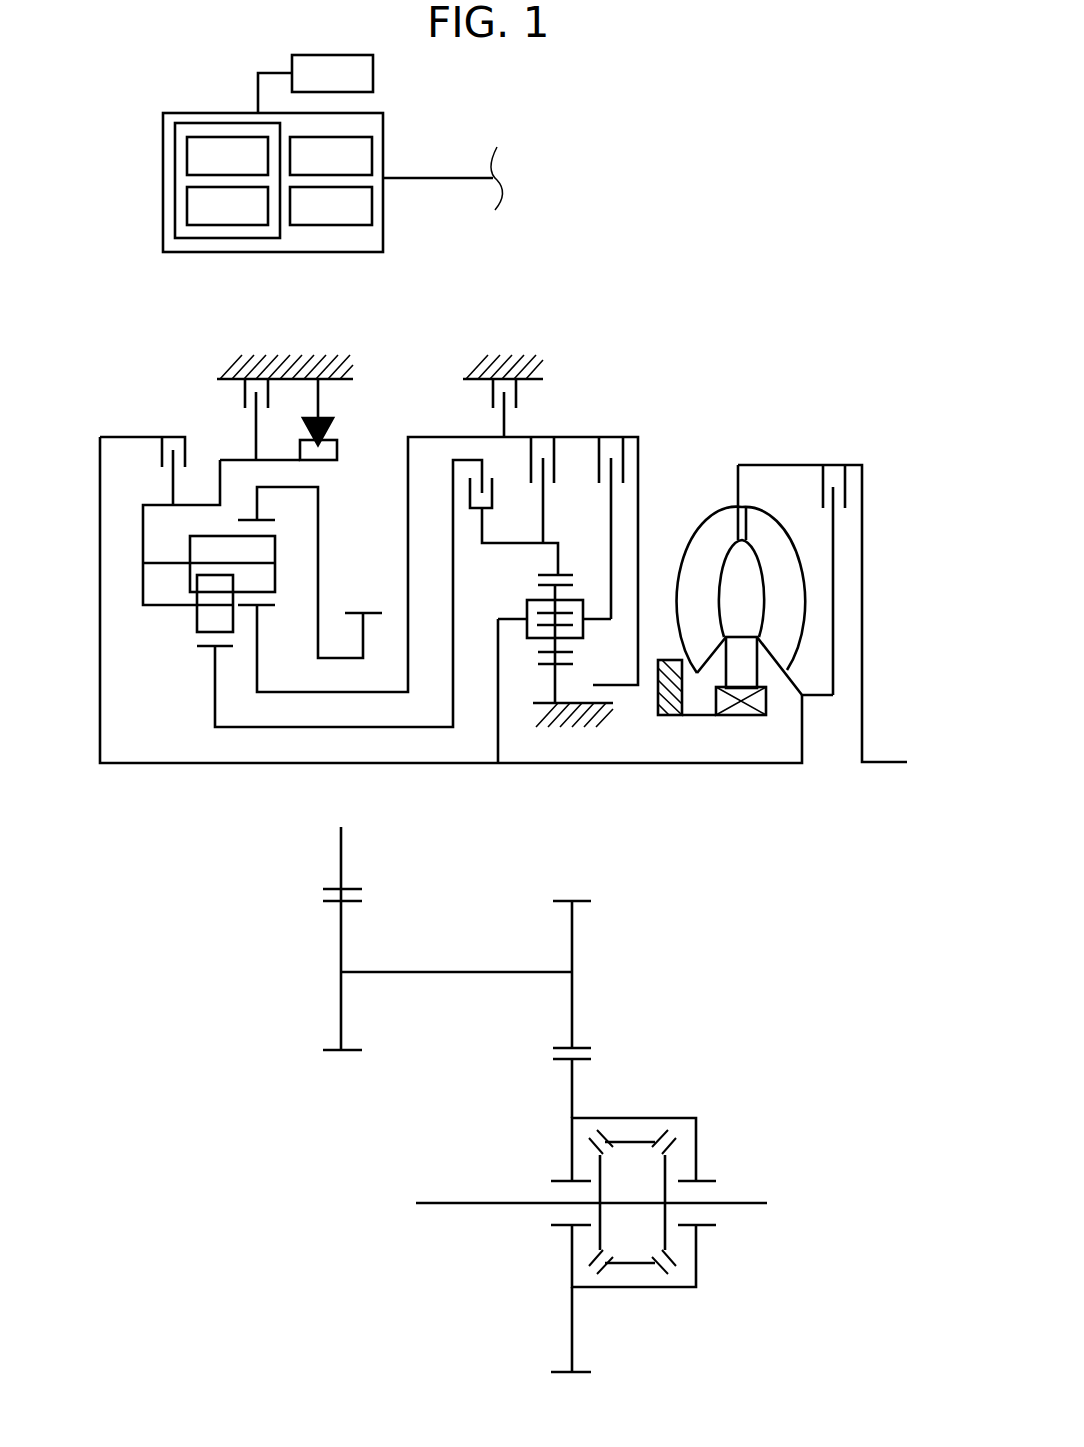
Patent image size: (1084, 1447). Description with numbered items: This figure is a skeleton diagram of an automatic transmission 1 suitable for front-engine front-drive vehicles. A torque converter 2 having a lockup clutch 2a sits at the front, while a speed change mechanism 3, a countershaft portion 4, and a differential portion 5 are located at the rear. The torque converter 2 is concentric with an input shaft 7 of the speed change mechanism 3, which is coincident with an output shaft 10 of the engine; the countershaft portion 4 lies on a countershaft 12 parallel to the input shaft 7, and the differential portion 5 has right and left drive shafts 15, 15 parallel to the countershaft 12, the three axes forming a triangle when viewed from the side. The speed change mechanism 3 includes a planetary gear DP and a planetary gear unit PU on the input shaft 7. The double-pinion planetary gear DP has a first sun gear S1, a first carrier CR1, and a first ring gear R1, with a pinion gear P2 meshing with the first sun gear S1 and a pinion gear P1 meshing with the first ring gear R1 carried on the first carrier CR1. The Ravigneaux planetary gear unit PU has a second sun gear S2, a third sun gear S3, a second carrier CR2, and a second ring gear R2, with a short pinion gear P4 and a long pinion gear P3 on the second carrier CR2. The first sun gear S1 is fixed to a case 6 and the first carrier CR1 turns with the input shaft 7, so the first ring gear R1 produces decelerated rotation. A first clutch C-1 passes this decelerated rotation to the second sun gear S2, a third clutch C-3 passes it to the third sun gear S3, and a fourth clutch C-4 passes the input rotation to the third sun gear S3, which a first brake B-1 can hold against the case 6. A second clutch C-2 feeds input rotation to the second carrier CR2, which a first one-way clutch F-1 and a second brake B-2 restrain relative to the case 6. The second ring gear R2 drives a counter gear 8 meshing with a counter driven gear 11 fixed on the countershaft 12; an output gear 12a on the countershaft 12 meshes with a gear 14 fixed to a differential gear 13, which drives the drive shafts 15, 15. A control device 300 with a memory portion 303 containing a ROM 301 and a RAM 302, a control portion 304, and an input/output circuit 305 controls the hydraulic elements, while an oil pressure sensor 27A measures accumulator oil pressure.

The automatic transmission 1 is at (698, 313).
The torque converter 2 is at (764, 452).
The lockup clutch 2a is at (838, 500).
The speed change mechanism 3 is at (403, 338).
The countershaft portion 4 is at (634, 988).
The differential portion 5 is at (699, 1110).
The case 6 is at (215, 368).
The input shaft 7 is at (725, 765).
The counter gear 8 is at (372, 613).
The output shaft of engine 10 is at (875, 762).
The counter driven gear 11 is at (338, 945).
The countershaft 12 is at (448, 972).
The output gear 12a is at (575, 932).
The differential gear 13 is at (633, 1290).
The gear 14 is at (575, 1090).
The drive shafts 15 is at (455, 1205).
The oil pressure sensor 27A is at (376, 80).
The control device 300 is at (202, 112).
The ROM 301 is at (186, 158).
The RAM 302 is at (187, 208).
The memory portion 303 is at (175, 228).
The control portion 304 is at (372, 157).
The input/output circuit 305 is at (372, 205).
The first brake B-1 is at (500, 381).
The second brake B-2 is at (251, 392).
The first one-way clutch F-1 is at (317, 392).
The first clutch C-1 is at (514, 516).
The second clutch C-2 is at (145, 456).
The third clutch C-3 is at (539, 445).
The fourth clutch C-4 is at (604, 513).
The planetary gear DP is at (567, 566).
The planetary gear unit PU is at (153, 611).
The first ring gear R1 is at (540, 574).
The second ring gear R2 is at (265, 512).
The first sun gear S1 is at (545, 666).
The second sun gear S2 is at (207, 648).
The third sun gear S3 is at (262, 610).
The pinion gear P1 is at (545, 586).
The pinion gear P2 is at (540, 652).
The long pinion gear P3 is at (277, 574).
The short pinion gear P4 is at (197, 618).
The first carrier CR1 is at (588, 628).
The second carrier CR2 is at (143, 516).